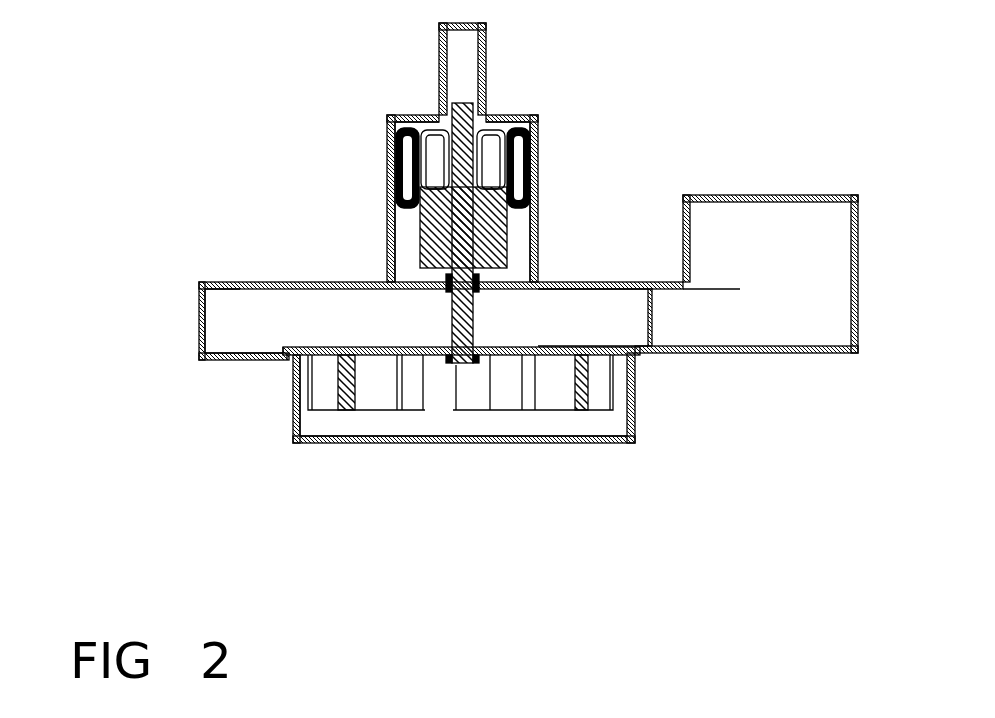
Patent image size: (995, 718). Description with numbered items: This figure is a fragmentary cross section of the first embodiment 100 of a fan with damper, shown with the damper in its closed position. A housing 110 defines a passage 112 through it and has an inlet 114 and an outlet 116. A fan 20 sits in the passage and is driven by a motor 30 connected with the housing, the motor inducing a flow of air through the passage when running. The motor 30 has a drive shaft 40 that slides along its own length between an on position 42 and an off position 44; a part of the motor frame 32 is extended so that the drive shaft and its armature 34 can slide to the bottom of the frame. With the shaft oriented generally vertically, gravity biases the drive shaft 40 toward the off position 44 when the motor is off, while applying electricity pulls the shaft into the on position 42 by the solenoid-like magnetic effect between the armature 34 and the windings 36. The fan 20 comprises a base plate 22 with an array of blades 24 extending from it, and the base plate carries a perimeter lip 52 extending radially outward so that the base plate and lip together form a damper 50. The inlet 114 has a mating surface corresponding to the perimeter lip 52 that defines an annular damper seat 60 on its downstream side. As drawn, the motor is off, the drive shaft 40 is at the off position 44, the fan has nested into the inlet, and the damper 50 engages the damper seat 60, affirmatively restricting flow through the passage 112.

The fan 20 is at (455, 412).
The base plate 22 is at (336, 342).
The blades 24 is at (503, 401).
The motor 30 is at (358, 66).
The motor frame 32 is at (390, 118).
The armature 34 is at (416, 240).
The windings 36 is at (393, 160).
The drive shaft 40 is at (487, 132).
The on position 42 is at (535, 152).
The off position 44 is at (521, 248).
The damper 50 is at (540, 337).
The perimeter lip 52 is at (641, 348).
The damper seat 60 is at (643, 362).
The first embodiment 100 is at (212, 512).
The housing 110 is at (222, 283).
The passage 112 is at (241, 331).
The inlet 114 is at (343, 430).
The outlet 116 is at (779, 207).